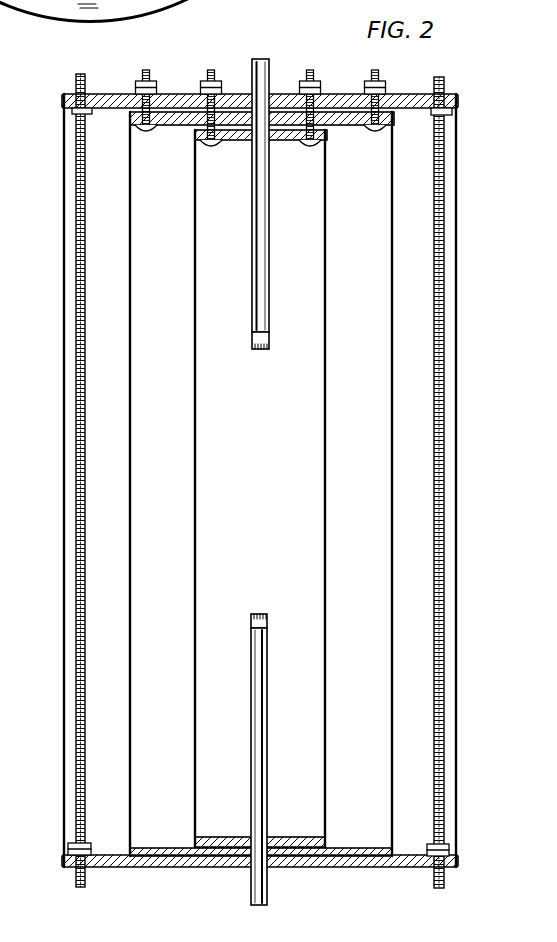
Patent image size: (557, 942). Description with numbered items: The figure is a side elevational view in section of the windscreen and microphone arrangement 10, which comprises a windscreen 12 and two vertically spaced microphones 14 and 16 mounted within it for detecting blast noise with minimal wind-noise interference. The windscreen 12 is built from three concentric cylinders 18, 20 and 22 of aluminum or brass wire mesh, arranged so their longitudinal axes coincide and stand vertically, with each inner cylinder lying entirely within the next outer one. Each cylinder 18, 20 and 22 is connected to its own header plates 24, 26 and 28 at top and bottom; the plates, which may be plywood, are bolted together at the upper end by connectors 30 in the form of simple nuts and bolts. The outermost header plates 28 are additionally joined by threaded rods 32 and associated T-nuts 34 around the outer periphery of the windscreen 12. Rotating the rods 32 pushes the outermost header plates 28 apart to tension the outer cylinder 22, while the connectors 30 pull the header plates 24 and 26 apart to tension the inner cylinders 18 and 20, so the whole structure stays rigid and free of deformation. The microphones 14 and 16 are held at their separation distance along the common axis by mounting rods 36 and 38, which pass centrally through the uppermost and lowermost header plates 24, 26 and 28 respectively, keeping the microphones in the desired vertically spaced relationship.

The windscreen and microphone arrangement 10 is at (252, 472).
The windscreen 12 is at (3, 188).
The microphone 14 is at (263, 339).
The microphone 16 is at (265, 625).
The cylinder 18 is at (195, 490).
The cylinder 20 is at (130, 387).
The cylinder 22 is at (62, 408).
The header plate 24 is at (240, 138).
The header plate 26 is at (344, 124).
The header plate 28 is at (176, 96).
The connector 30 is at (147, 74).
The threaded rod 32 is at (77, 82).
The T-nut 34 is at (72, 845).
The mounting rod 36 is at (269, 257).
The mounting rod 38 is at (265, 717).